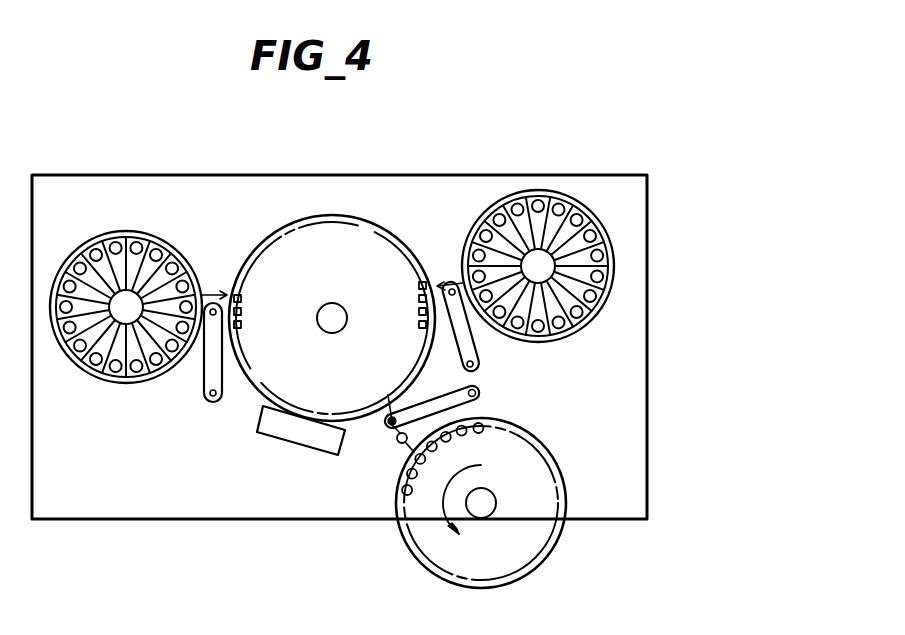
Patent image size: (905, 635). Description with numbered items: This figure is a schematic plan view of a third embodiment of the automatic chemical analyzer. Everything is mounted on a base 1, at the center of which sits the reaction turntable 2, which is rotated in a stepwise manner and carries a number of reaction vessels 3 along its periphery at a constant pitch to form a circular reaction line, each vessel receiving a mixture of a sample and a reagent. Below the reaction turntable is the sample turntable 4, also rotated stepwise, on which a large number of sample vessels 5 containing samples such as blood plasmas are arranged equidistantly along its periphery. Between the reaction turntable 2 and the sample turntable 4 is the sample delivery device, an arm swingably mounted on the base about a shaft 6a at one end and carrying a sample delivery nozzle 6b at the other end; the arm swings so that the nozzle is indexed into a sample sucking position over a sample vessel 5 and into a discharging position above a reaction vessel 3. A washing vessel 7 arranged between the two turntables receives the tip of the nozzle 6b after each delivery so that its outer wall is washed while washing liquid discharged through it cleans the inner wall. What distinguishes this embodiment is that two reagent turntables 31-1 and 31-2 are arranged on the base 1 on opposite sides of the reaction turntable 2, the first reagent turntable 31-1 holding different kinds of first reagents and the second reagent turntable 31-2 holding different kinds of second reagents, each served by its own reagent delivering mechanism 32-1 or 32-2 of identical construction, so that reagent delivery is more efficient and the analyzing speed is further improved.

The base 1 is at (95, 175).
The reaction turntable 2 is at (317, 215).
The reaction vessels 3 is at (418, 274).
The sample turntable 4 is at (433, 572).
The sample vessels 5 is at (408, 450).
The shaft 6a is at (480, 392).
The sample delivery nozzle 6b is at (385, 425).
The washing vessel 7 is at (398, 441).
The first reagent turntable 31-1 is at (560, 192).
The second reagent turntable 31-2 is at (155, 235).
The first reagent delivering mechanism 32-1 is at (483, 343).
The second reagent delivering mechanism 32-2 is at (193, 370).